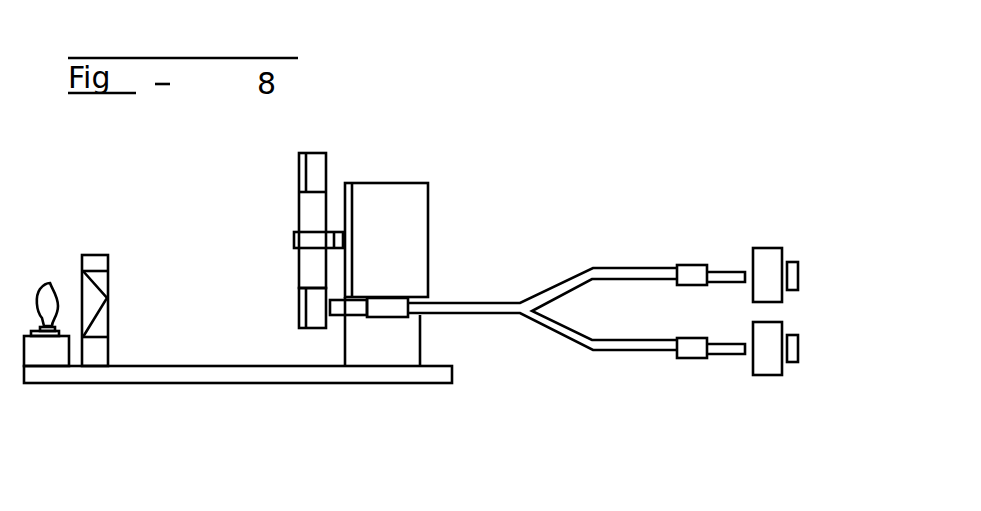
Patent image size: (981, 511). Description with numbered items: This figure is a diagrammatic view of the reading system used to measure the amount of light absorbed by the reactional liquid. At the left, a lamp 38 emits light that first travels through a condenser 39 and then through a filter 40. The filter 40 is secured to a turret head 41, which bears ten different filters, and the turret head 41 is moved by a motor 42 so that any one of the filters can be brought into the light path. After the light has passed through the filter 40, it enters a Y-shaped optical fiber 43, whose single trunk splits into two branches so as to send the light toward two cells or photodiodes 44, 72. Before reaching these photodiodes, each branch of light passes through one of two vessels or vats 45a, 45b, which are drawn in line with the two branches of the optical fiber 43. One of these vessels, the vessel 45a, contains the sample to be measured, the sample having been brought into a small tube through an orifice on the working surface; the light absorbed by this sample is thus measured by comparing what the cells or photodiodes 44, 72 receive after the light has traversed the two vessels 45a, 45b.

The lamp 38 is at (41, 298).
The condenser 39 is at (82, 282).
The filter 40 is at (312, 307).
The turret head 41 is at (297, 195).
The motor 42 is at (403, 207).
The Y-shaped optical fiber 43 is at (455, 305).
The cell or photodiode 44 is at (798, 275).
The vessel or vat 45a is at (765, 260).
The vessel or vat 45b is at (765, 362).
The cell or photodiode 72 is at (798, 348).